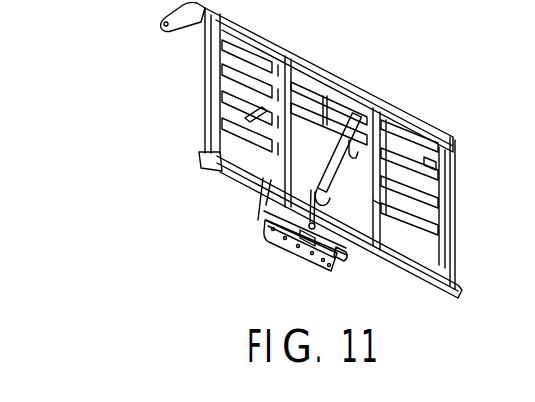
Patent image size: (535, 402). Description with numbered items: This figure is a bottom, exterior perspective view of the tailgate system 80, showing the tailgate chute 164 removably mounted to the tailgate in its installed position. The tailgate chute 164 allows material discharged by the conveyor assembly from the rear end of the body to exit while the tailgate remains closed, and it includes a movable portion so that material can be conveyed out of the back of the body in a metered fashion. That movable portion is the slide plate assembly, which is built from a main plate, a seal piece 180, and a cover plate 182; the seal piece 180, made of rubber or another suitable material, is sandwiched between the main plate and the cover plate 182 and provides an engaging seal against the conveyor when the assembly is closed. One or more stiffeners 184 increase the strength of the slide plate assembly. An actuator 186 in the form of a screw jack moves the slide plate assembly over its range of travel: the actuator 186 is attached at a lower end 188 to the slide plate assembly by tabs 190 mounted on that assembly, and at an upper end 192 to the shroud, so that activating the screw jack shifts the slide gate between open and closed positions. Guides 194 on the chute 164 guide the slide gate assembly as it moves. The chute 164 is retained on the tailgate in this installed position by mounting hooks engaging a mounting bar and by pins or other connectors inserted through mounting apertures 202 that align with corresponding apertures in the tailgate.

The tailgate system 80 is at (198, 72).
The tailgate chute 164 is at (259, 241).
The seal piece 180 is at (308, 279).
The cover plate 182 is at (288, 242).
The stiffeners 184 is at (332, 278).
The actuator 186 is at (367, 118).
The lower end 188 is at (262, 219).
The tabs 190 is at (350, 249).
The upper end 192 is at (325, 96).
The guides 194 is at (376, 207).
The mounting apertures 202 is at (378, 178).